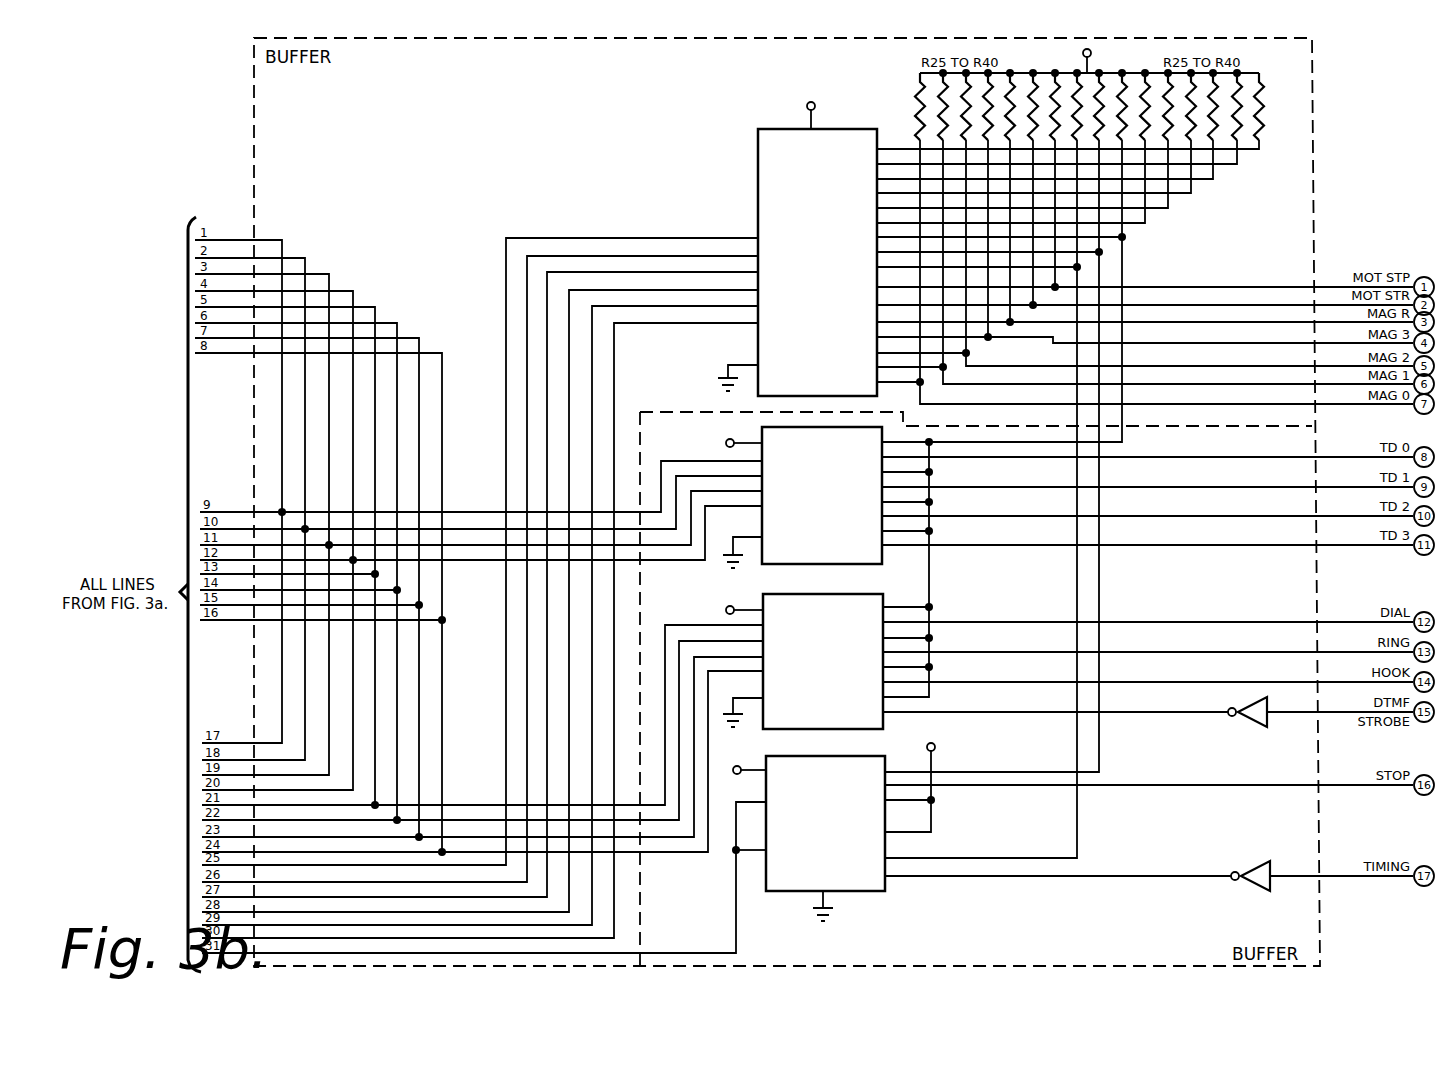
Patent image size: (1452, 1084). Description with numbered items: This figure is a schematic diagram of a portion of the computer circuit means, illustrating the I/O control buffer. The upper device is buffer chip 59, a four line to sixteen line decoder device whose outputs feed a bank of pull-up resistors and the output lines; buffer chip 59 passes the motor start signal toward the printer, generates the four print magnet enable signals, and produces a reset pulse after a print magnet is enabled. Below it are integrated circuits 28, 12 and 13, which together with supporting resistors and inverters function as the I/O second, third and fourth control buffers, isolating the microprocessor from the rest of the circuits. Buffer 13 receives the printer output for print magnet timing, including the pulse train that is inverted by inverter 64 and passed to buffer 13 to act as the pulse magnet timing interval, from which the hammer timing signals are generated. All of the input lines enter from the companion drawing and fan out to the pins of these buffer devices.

The buffer chip 59 is at (765, 186).
The integrated circuit 28 is at (870, 563).
The integrated circuit 12 is at (870, 729).
The buffer 13 is at (862, 890).
The inverter 64 is at (1262, 888).